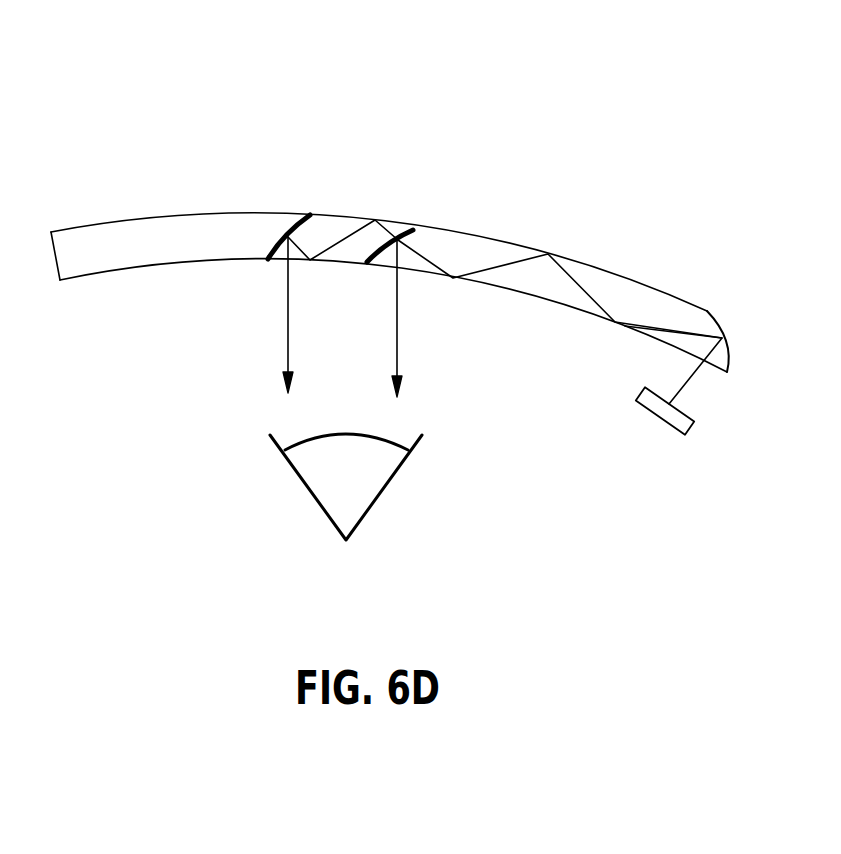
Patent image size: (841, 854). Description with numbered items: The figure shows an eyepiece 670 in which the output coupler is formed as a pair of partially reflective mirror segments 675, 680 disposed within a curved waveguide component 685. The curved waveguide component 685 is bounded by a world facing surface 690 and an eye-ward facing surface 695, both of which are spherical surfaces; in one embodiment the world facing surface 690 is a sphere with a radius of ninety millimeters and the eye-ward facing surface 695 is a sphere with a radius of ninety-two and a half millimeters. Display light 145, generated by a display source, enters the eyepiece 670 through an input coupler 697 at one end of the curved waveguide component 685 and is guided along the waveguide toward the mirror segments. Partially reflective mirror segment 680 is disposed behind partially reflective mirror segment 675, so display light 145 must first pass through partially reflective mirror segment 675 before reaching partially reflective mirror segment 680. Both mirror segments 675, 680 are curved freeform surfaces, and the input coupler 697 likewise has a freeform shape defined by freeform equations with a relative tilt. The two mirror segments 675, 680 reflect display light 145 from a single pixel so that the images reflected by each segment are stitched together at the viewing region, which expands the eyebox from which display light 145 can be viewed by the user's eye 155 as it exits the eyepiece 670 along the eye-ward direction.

The eyepiece 670 is at (722, 91).
The world facing surface 690 is at (499, 234).
The eye-ward facing surface 695 is at (580, 312).
The input coupler 697 is at (721, 324).
The partially reflective mirror segment 680 is at (298, 218).
The partially reflective mirror segment 675 is at (403, 228).
The curved waveguide component 685 is at (557, 289).
The user's eye 155 is at (358, 488).
The display light 145 is at (692, 380).